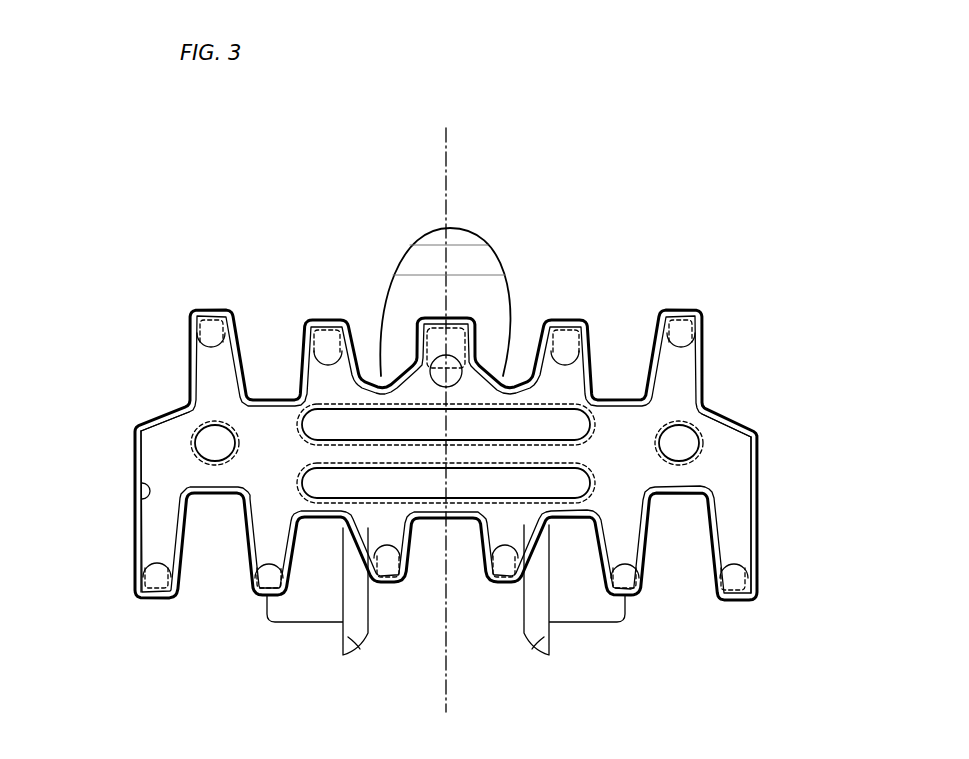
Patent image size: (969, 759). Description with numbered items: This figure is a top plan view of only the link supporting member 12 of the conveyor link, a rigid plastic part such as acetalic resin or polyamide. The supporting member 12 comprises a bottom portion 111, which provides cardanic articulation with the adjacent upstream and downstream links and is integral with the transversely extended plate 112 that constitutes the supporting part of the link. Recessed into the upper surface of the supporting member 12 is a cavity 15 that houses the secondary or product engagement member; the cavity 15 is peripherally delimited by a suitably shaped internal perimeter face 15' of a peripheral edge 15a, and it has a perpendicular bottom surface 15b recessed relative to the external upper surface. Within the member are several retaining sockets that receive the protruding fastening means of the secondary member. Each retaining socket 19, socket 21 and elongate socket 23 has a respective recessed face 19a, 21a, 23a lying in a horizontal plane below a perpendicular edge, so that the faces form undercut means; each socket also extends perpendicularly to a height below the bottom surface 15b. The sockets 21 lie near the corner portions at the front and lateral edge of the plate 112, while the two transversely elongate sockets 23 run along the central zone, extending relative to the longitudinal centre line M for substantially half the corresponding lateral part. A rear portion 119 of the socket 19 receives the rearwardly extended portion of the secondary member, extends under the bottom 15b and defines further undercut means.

The link supporting member 12 is at (237, 237).
The transversely extended plate 112 is at (767, 508).
The longitudinal centre line M is at (443, 155).
The bottom portion 111 is at (498, 233).
The rear portion of the socket 119 is at (438, 366).
The retaining socket 19 is at (210, 333).
The recessed face of the socket 19a is at (702, 325).
The transversely elongate socket 23 is at (533, 430).
The recessed face of the elongate socket 23a is at (316, 404).
The socket for protrusion 21 is at (208, 434).
The recessed face of the corner socket 21a is at (702, 442).
The cavity 15 is at (123, 489).
The peripheral edge 15a is at (138, 460).
The internal perimeter face 15' is at (97, 492).
The bottom surface of the cavity 15b is at (210, 390).